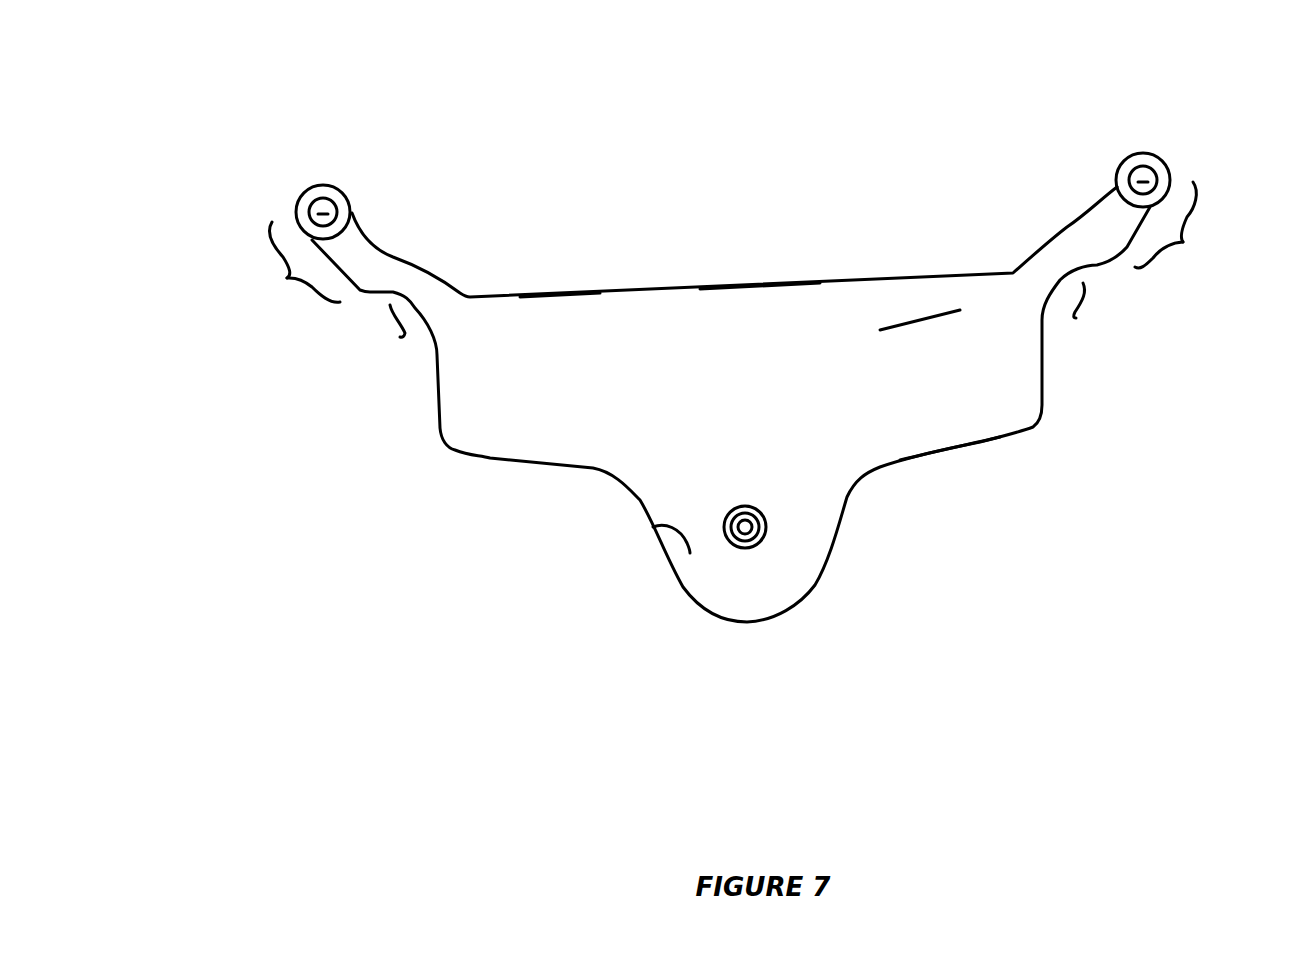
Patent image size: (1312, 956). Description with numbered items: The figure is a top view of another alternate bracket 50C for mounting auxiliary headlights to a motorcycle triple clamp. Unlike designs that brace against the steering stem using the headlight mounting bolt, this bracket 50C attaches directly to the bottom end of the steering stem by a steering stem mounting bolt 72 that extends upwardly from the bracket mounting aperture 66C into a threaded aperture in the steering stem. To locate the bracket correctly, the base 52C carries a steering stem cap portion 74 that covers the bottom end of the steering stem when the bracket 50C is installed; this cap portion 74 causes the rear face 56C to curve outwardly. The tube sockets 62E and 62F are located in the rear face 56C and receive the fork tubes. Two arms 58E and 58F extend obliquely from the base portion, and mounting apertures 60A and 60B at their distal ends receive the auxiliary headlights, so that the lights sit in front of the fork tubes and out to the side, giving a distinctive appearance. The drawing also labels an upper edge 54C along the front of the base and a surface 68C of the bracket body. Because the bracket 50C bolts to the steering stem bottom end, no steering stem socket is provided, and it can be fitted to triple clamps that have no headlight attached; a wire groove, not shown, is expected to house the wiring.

The bracket 50C is at (468, 630).
The base 52C is at (890, 327).
The upper edge 54C is at (753, 285).
The rear face 56C is at (898, 460).
The arm 58E is at (290, 277).
The arm 58F is at (1183, 242).
The mounting aperture 60A is at (323, 210).
The mounting aperture 60B is at (1143, 177).
The tube socket 62E is at (392, 324).
The tube socket 62F is at (1080, 300).
The bracket mounting aperture 66C is at (717, 557).
The surface 68C is at (517, 368).
The steering stem mounting bolt 72 is at (770, 540).
The steering stem cap portion 74 is at (653, 527).